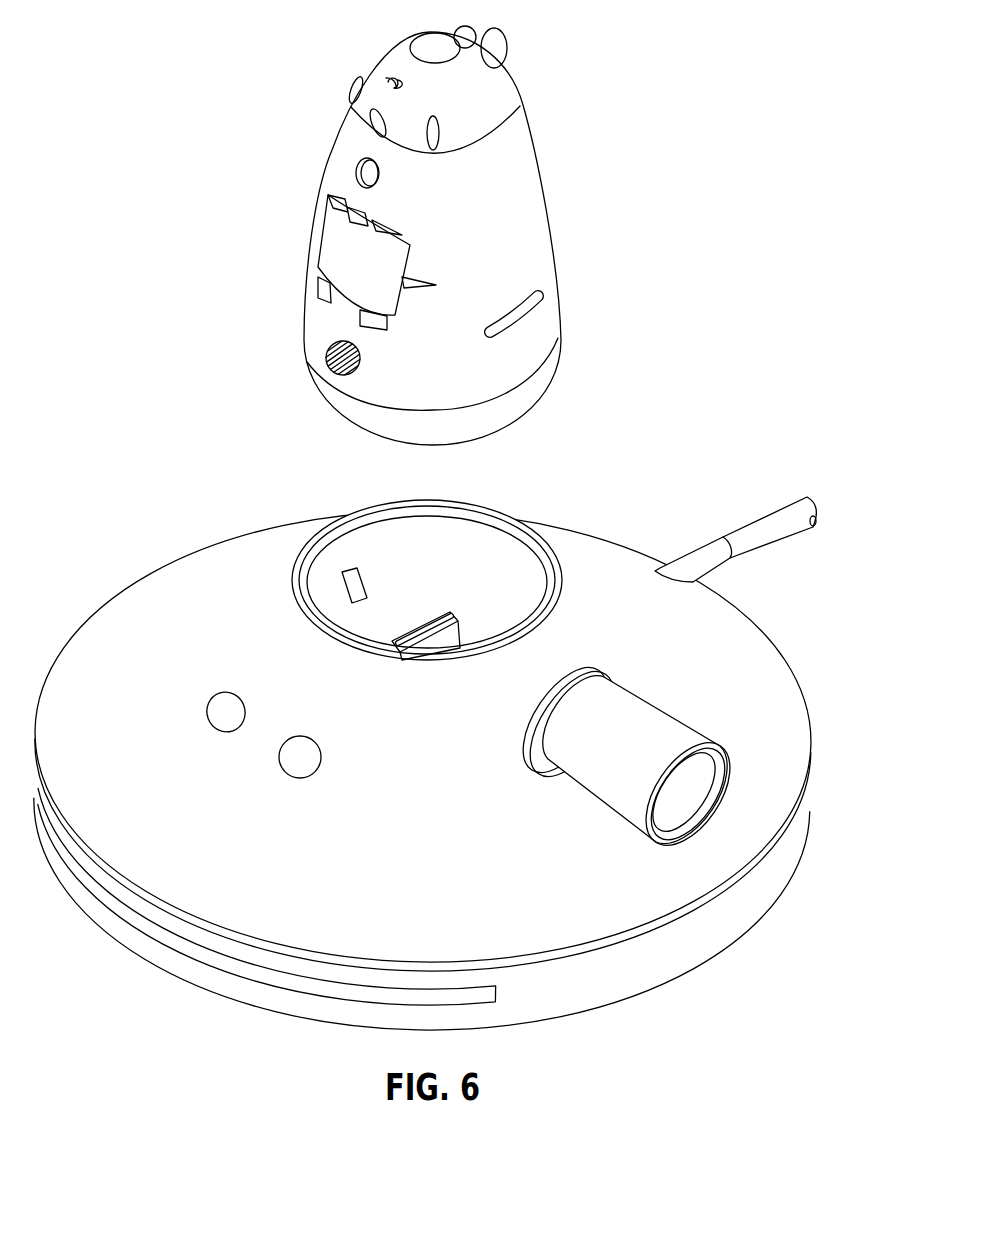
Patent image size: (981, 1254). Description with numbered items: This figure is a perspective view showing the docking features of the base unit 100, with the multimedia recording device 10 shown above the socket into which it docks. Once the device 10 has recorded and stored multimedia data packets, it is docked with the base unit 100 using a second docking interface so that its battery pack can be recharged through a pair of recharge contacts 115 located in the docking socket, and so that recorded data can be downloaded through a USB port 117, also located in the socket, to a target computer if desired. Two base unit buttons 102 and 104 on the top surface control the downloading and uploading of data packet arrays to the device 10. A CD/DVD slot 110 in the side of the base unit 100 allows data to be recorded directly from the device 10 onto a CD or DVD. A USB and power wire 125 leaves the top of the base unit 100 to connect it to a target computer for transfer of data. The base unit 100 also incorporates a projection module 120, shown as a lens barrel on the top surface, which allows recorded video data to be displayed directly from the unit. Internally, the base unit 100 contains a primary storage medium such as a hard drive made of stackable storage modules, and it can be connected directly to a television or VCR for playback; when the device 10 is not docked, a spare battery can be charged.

The device 10 is at (535, 97).
The base unit 100 is at (627, 1003).
The base unit button 102 is at (300, 757).
The base unit button 104 is at (220, 710).
The CD/DVD slot 110 is at (228, 965).
The recharge contacts 115 is at (353, 578).
The USB port 117 is at (467, 623).
The projection module 120 is at (618, 715).
The USB and power wire 125 is at (755, 525).